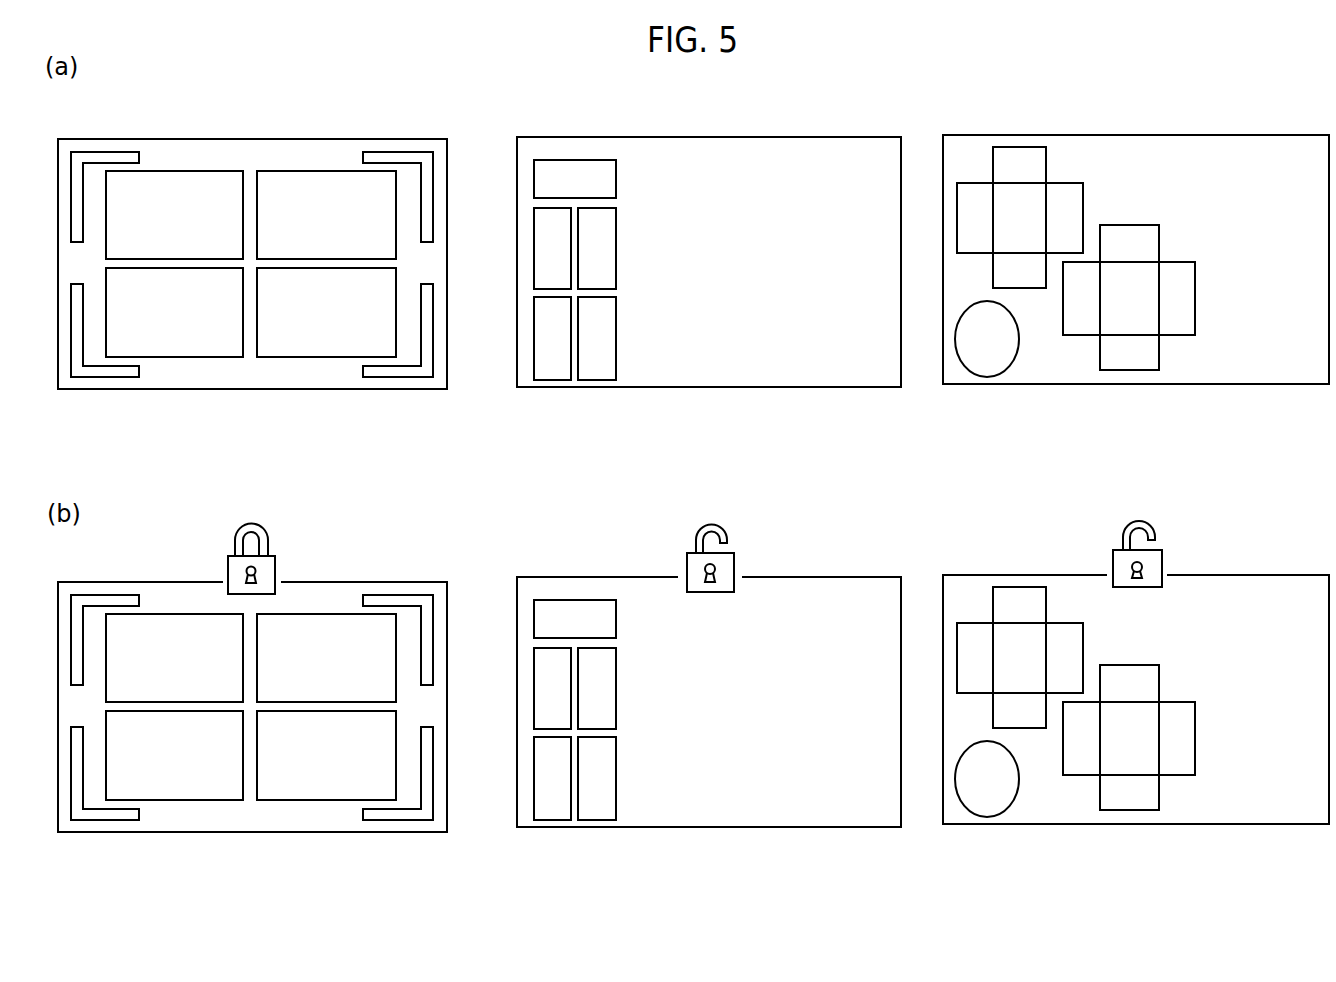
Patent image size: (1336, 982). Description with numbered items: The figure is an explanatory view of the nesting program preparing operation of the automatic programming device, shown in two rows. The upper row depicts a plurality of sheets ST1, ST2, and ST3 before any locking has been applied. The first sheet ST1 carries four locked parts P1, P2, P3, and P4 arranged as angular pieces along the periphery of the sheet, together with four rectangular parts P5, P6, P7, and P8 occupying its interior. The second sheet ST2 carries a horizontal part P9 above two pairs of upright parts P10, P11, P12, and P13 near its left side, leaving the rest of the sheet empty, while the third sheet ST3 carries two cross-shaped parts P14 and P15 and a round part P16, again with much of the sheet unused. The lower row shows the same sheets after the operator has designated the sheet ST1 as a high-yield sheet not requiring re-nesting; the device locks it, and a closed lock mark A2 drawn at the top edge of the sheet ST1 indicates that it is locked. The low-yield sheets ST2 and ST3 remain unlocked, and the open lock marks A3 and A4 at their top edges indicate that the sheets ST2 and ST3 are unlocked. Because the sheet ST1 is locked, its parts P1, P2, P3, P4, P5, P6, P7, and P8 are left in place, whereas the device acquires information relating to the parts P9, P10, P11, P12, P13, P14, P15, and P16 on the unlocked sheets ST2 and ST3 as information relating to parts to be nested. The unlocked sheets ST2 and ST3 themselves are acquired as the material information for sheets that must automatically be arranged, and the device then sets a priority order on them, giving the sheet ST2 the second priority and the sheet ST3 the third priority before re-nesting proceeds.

The sheet ST1 is at (356, 140).
The sheet ST2 is at (815, 140).
The sheet ST3 is at (1242, 140).
The part P1 is at (108, 157).
The part P2 is at (403, 157).
The part P3 is at (398, 373).
The part P4 is at (101, 373).
The part P5 is at (186, 177).
The part P6 is at (318, 177).
The part P7 is at (307, 350).
The part P8 is at (197, 350).
The part P9 is at (577, 167).
The part P10 is at (538, 242).
The part P11 is at (612, 253).
The part P12 is at (538, 343).
The part P13 is at (612, 337).
The part P14 is at (1025, 153).
The part P15 is at (1133, 362).
The part P16 is at (1000, 363).
The lock mark A2 is at (270, 521).
The lock mark A3 is at (723, 518).
The lock mark A4 is at (1153, 514).